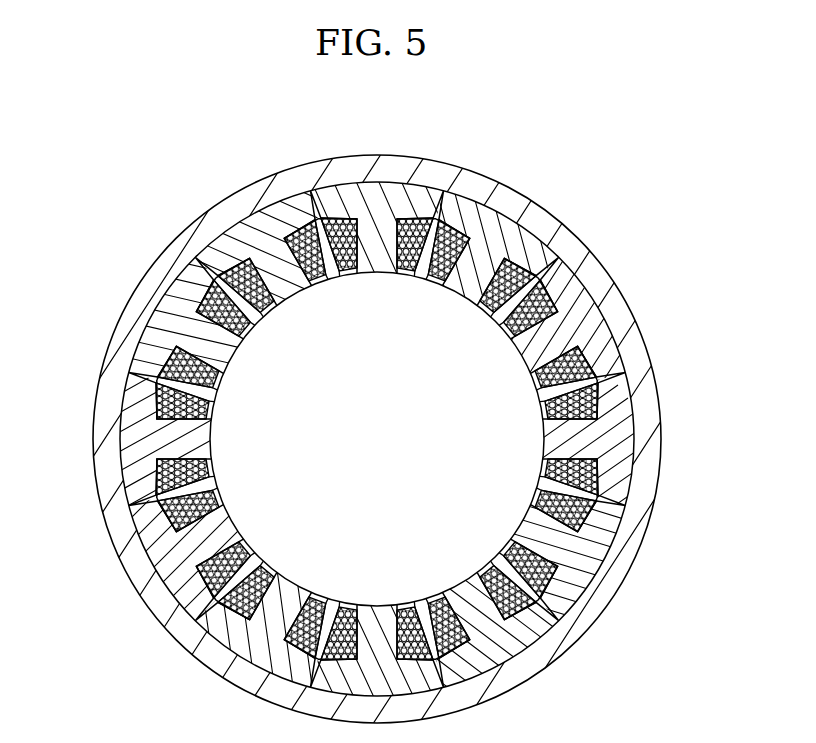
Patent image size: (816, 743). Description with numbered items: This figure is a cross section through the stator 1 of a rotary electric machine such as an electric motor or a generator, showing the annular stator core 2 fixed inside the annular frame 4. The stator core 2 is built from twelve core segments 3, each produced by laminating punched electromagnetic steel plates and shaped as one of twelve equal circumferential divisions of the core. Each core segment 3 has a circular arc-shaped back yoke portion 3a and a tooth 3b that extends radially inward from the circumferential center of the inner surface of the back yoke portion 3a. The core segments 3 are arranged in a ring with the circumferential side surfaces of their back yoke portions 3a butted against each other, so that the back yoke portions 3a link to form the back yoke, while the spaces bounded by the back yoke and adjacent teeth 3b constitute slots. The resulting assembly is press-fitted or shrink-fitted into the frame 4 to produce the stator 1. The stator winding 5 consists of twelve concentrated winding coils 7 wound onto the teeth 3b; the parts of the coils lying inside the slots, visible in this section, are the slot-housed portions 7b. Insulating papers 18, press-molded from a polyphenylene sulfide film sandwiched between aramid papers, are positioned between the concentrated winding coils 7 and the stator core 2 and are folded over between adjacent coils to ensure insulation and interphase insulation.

The stator 1 is at (124, 90).
The stator core 2 is at (643, 347).
The core segment 3 is at (677, 223).
The back yoke portion 3a is at (553, 338).
The tooth 3b is at (610, 348).
The frame 4 is at (172, 252).
The stator winding 5 is at (170, 368).
The concentrated winding coil 7 is at (153, 405).
The slot-housed portion 7b is at (167, 470).
The insulating paper 18 is at (207, 476).